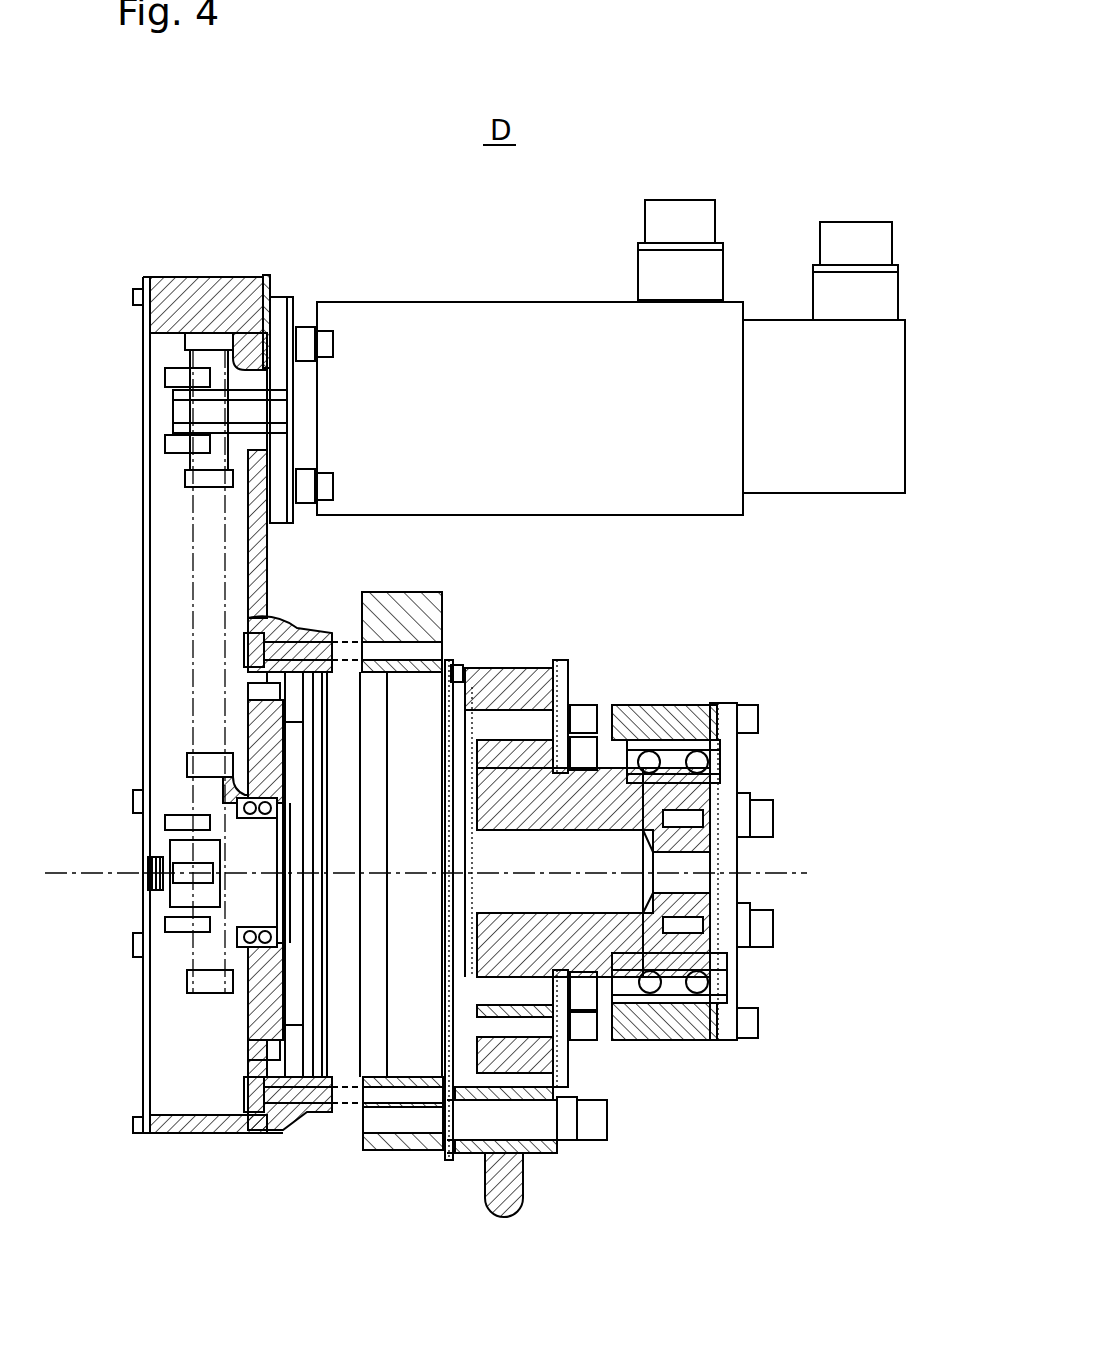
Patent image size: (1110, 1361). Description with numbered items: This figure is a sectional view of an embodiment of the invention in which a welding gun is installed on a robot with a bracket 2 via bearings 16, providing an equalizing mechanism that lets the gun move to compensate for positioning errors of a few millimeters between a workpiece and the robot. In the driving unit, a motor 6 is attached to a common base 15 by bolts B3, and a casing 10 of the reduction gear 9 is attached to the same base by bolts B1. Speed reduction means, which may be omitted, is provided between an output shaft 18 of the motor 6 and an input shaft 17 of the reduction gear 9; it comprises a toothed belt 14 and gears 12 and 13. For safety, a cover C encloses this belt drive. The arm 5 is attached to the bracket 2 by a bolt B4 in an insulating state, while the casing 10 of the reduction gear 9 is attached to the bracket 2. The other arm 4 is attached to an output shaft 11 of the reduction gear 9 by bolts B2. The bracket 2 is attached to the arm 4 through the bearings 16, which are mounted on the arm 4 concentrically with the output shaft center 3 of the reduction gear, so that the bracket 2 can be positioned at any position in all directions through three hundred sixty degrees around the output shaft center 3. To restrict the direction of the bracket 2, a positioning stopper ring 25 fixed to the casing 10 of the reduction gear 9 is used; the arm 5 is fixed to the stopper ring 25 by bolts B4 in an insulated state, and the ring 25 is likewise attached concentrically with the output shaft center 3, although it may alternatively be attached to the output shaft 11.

The bracket 2 is at (648, 718).
The output shaft center 3 is at (75, 870).
The arm 4 is at (512, 675).
The arm 5 is at (500, 1190).
The motor 6 is at (565, 325).
The reduction gear 9 is at (400, 985).
The casing 10 is at (345, 1010).
The output shaft 11 is at (642, 1030).
The gear 12 is at (195, 768).
The gear 13 is at (205, 467).
The toothed belt 14 is at (195, 565).
The common base 15 is at (220, 292).
The bearings 16 is at (700, 758).
The input shaft 17 is at (175, 895).
The output shaft 18 is at (185, 405).
The positioning stopper ring 25 is at (397, 612).
The bolts B1 is at (292, 648).
The bolts B2 is at (572, 735).
The bolts B3 is at (335, 343).
The bolt B4 is at (590, 1137).
The cover C is at (145, 1020).